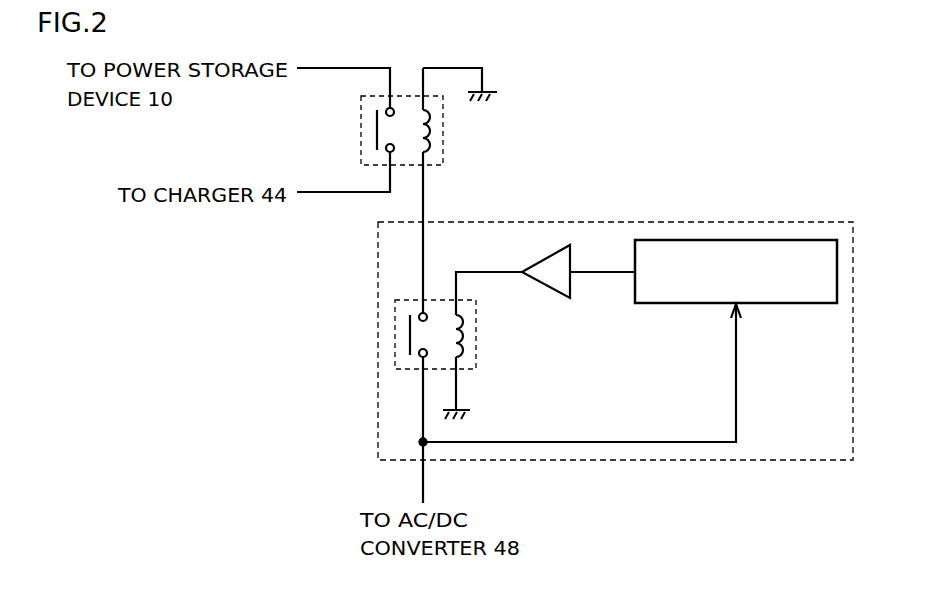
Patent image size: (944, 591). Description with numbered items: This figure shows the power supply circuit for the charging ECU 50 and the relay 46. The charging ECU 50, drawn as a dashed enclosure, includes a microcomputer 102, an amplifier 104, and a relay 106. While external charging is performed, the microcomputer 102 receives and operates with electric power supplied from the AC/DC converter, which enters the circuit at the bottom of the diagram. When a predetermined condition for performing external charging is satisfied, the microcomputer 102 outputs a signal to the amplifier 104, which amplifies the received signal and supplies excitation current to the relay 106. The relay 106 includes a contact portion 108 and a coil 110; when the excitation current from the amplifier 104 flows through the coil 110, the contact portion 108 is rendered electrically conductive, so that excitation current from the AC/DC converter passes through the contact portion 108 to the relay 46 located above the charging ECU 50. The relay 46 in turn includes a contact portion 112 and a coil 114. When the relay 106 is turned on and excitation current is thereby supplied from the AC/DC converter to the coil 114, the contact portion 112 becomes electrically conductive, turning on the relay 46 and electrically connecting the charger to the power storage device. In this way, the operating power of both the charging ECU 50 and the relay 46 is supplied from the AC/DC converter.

The relay 46 is at (443, 165).
The contact portion 112 is at (376, 128).
The coil 114 is at (433, 130).
The charging ECU 50 is at (817, 222).
The microcomputer 102 is at (818, 303).
The amplifier 104 is at (545, 257).
The relay 106 is at (476, 369).
The contact portion 108 is at (409, 335).
The coil 110 is at (466, 337).